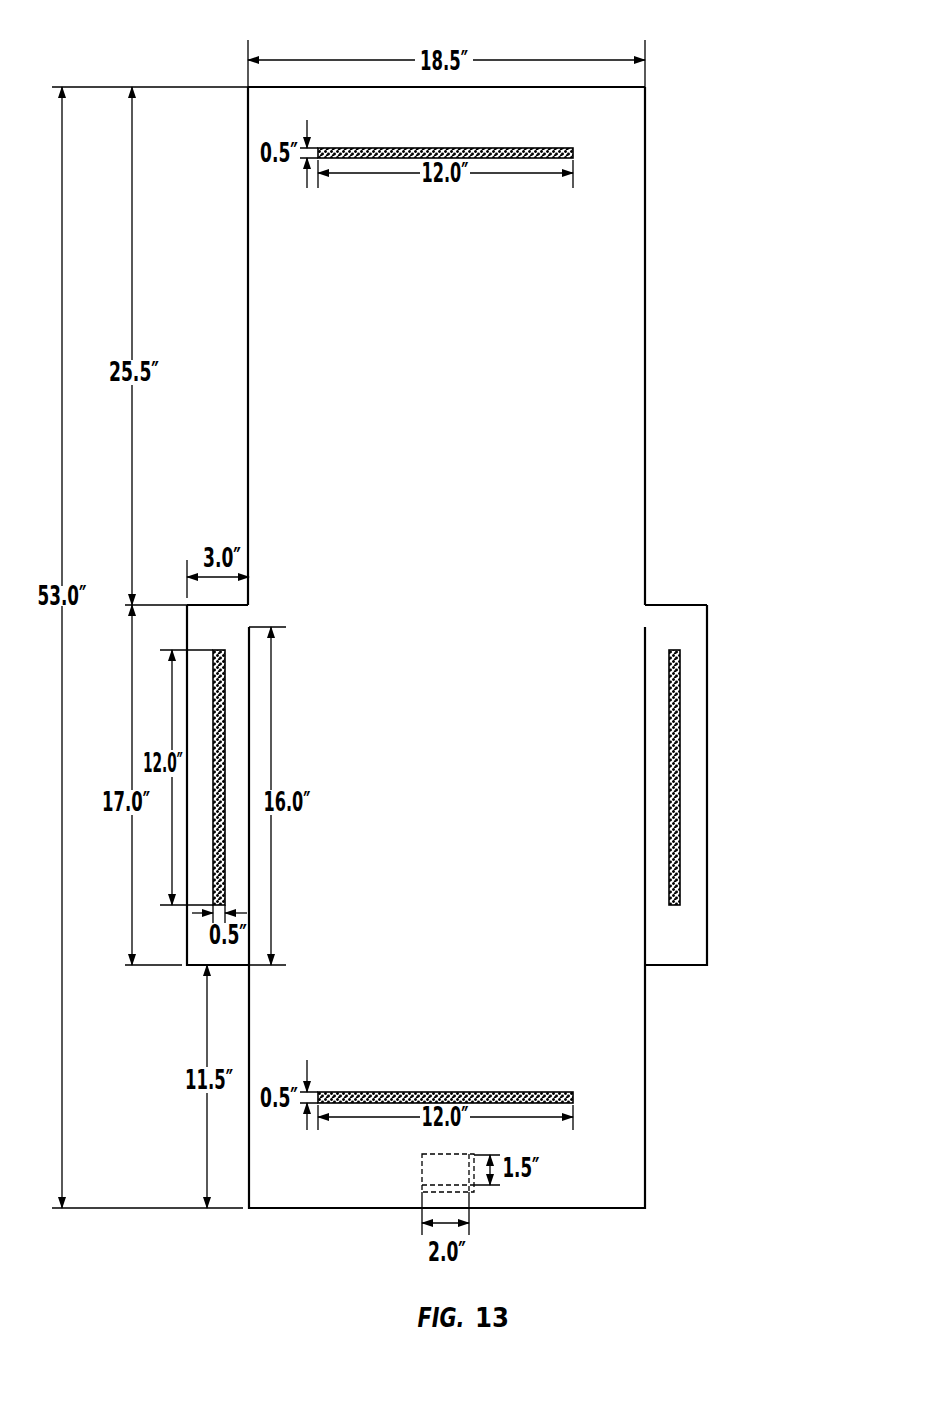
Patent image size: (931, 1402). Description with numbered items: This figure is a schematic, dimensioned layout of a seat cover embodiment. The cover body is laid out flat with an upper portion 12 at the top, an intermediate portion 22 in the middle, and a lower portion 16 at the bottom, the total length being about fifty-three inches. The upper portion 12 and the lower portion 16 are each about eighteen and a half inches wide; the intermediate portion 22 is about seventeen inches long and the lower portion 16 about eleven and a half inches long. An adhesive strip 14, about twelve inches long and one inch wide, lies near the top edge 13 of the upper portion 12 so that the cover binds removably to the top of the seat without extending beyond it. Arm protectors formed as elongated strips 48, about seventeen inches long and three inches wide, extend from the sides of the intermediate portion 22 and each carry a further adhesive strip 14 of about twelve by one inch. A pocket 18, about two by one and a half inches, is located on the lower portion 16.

The upper portion 12 is at (612, 225).
The top edge 13 is at (510, 87).
The adhesive strip 14 is at (553, 147).
The lower portion 16 is at (613, 1148).
The pocket 18 is at (438, 1171).
The intermediate portion 22 is at (495, 896).
The elongated strips 48 is at (197, 934).